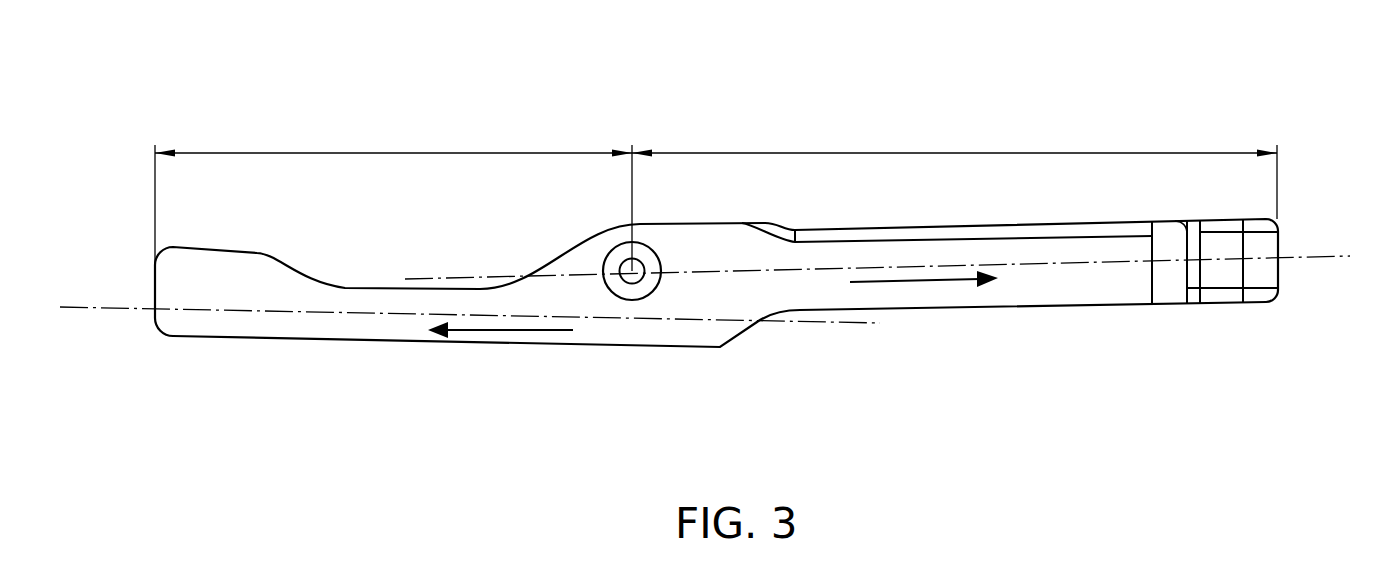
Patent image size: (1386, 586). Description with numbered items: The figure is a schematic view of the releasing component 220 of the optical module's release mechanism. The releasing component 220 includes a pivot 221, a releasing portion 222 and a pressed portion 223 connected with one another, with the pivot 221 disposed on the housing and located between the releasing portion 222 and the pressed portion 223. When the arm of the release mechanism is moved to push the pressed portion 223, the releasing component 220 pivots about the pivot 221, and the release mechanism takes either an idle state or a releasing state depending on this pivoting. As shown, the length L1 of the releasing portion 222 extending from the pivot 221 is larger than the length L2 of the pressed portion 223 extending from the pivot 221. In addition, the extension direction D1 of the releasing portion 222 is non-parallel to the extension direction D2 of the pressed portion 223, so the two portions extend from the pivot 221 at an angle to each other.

The releasing component 220 is at (466, 52).
The pivot 221 is at (625, 265).
The releasing portion 222 is at (1045, 285).
The pressed portion 223 is at (307, 323).
The extension direction of the releasing portion D1 is at (932, 282).
The extension direction of the pressed portion D2 is at (513, 330).
The length of the releasing portion L1 is at (954, 171).
The length of the pressed portion L2 is at (393, 194).